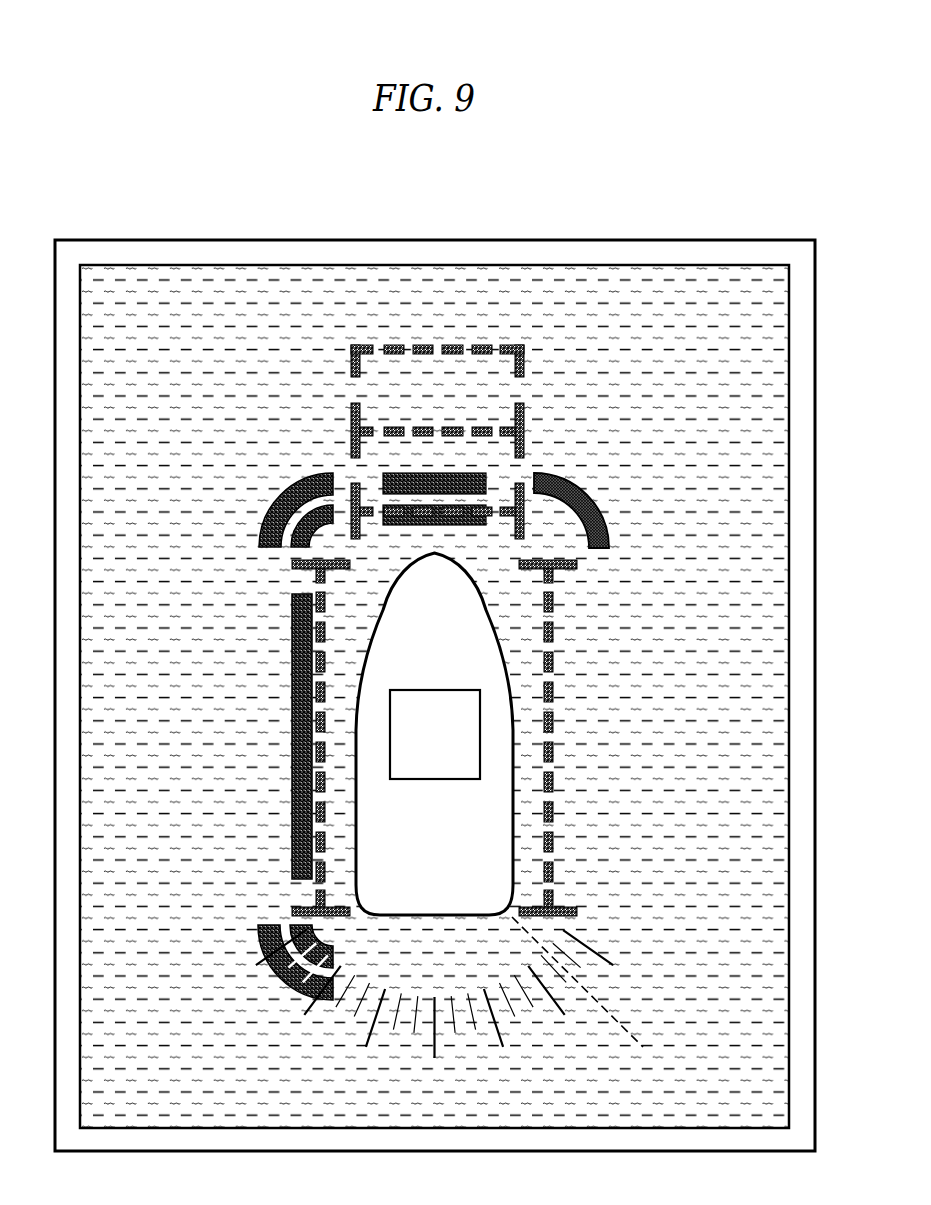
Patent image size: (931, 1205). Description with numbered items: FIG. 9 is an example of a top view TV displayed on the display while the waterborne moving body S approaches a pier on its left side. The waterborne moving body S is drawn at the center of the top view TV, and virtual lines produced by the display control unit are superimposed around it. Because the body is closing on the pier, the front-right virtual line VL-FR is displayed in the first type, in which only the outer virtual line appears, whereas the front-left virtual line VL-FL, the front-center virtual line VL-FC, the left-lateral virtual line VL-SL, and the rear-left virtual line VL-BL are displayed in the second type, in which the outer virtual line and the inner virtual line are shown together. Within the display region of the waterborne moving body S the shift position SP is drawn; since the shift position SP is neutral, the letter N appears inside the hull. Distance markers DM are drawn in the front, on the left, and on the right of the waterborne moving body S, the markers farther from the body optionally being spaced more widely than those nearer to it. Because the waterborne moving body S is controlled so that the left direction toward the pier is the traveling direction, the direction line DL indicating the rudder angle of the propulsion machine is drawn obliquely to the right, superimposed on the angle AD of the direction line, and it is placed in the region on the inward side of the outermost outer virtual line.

The top view TV is at (155, 243).
The distance marker DM is at (352, 550).
The front-center virtual line VL-FC is at (388, 528).
The front-right virtual line VL-FR is at (592, 504).
The front-left virtual line VL-FL is at (317, 545).
The left-lateral virtual line VL-SL is at (292, 728).
The rear-left virtual line VL-BL is at (313, 926).
The shift position SP is at (434, 690).
The waterborne moving body S is at (424, 888).
The angle of the direction line AD is at (241, 903).
The direction line DL is at (605, 1007).